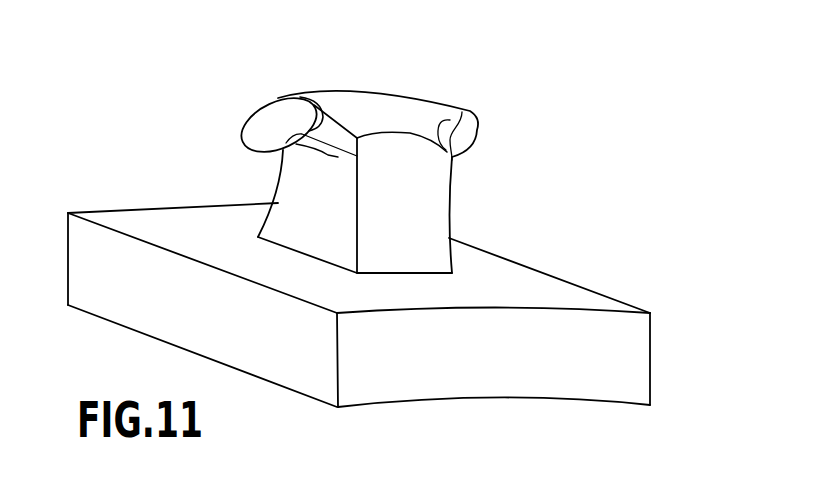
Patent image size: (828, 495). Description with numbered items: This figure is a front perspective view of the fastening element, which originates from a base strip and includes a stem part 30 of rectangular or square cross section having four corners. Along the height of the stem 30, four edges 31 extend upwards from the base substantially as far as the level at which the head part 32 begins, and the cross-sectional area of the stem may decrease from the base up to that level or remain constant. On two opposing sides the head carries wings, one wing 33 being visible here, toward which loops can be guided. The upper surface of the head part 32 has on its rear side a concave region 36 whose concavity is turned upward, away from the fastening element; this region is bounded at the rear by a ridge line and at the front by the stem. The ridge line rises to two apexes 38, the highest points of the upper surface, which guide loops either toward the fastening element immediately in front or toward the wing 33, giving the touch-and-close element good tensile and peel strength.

The stem part 30 is at (298, 192).
The edges 31 is at (357, 234).
The head part 32 is at (420, 103).
The wing 33 is at (263, 118).
The concave region 36 is at (383, 132).
The apex 38 is at (292, 94).